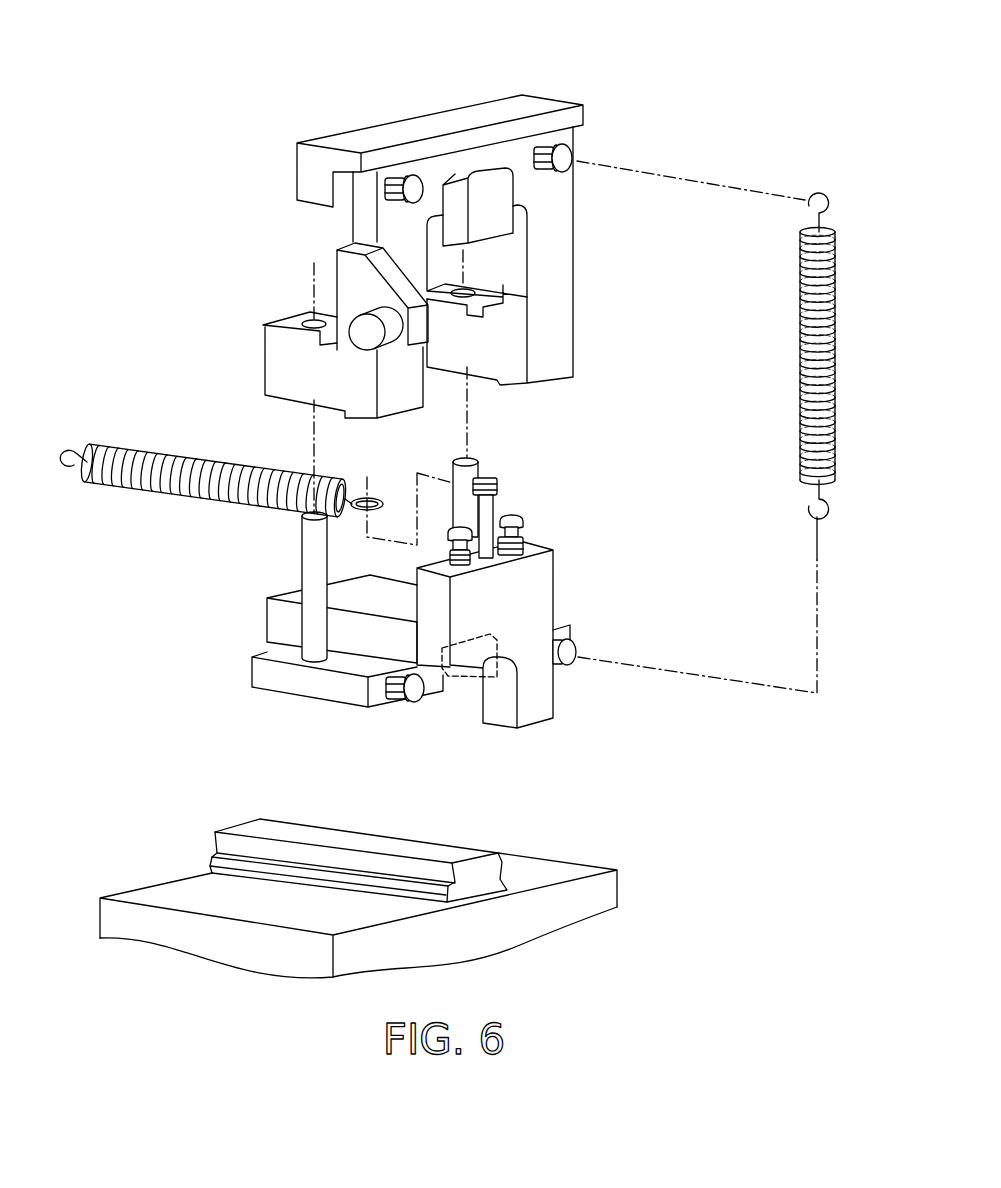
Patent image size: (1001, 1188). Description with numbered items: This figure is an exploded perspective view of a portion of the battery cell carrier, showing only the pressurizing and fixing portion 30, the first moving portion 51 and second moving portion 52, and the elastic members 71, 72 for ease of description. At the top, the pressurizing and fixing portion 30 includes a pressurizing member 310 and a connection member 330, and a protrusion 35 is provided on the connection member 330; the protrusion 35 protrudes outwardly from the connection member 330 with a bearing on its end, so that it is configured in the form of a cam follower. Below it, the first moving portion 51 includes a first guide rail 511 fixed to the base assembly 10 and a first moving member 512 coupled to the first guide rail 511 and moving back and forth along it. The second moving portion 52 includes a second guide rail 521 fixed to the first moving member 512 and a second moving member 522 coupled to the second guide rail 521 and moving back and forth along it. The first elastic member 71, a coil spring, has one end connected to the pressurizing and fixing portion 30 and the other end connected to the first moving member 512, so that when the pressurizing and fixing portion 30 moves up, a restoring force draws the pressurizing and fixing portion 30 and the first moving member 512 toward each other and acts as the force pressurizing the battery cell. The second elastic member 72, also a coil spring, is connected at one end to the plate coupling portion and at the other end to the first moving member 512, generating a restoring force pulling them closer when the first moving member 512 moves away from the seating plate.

The base assembly 10 is at (577, 864).
The pressurizing and fixing portion 30 is at (551, 193).
The pressurizing member 310 is at (533, 34).
The connection member 330 is at (538, 197).
The protrusion 35 is at (363, 334).
The first moving portion 51 is at (332, 707).
The first guide rail 511 is at (296, 835).
The first moving member 512 is at (362, 640).
The second moving portion 52 is at (540, 485).
The second guide rail 521 is at (497, 560).
The second moving member 522 is at (328, 380).
The first elastic member 71 is at (800, 263).
The second elastic member 72 is at (174, 462).